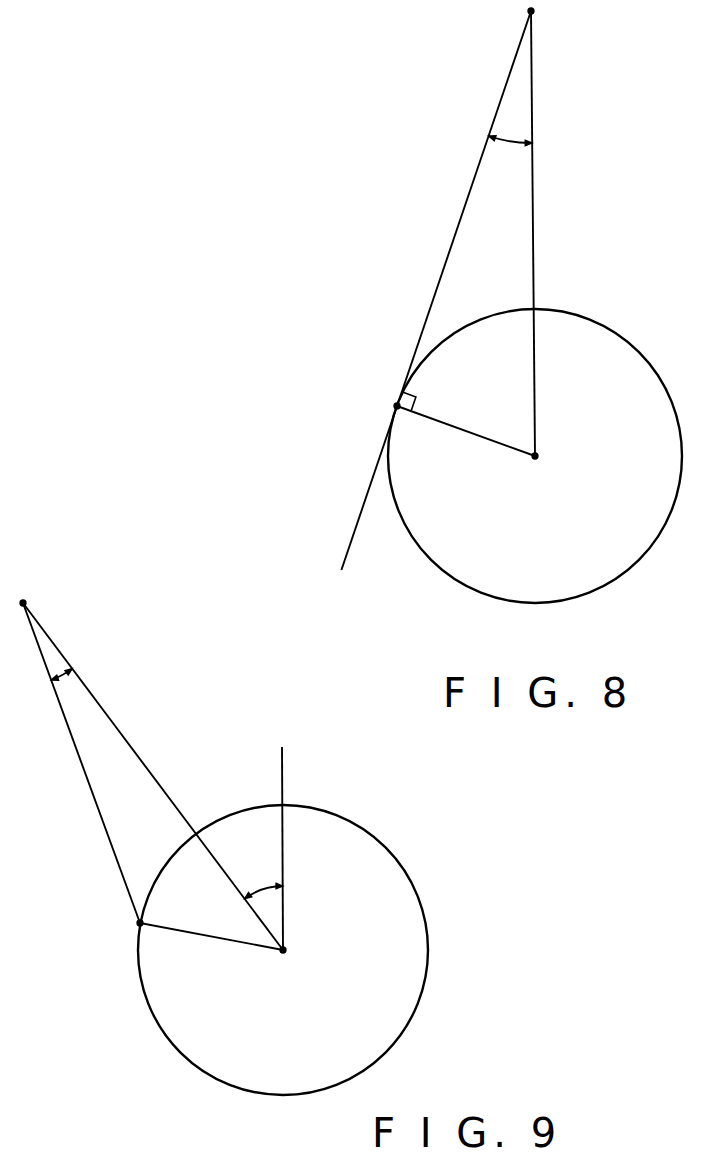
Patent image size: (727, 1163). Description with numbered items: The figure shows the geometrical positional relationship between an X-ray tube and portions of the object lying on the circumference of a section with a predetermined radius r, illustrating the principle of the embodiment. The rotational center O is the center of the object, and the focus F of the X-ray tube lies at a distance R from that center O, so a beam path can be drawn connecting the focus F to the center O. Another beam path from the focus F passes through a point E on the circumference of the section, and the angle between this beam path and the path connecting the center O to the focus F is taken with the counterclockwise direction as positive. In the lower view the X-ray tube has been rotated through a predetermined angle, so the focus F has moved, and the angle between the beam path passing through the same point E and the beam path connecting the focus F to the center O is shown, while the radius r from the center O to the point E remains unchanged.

In FIG. 8, the focus F is at (536, 14).
In FIG. 9, the focus F is at (39, 594).
In FIG. 8, the distance R is at (546, 233).
In FIG. 9, the distance R is at (153, 776).
In FIG. 8, the point E is at (395, 406).
In FIG. 9, the point E is at (137, 924).
In FIG. 8, the radius r is at (466, 431).
In FIG. 9, the radius r is at (211, 942).
In FIG. 8, the rotational center O is at (539, 453).
In FIG. 9, the rotational center O is at (288, 947).